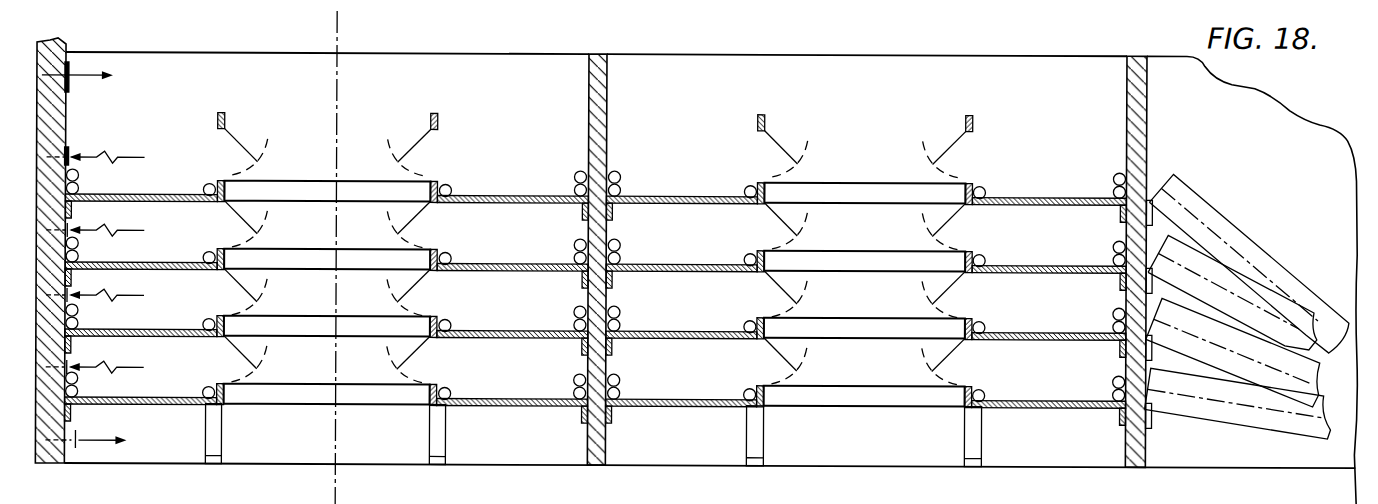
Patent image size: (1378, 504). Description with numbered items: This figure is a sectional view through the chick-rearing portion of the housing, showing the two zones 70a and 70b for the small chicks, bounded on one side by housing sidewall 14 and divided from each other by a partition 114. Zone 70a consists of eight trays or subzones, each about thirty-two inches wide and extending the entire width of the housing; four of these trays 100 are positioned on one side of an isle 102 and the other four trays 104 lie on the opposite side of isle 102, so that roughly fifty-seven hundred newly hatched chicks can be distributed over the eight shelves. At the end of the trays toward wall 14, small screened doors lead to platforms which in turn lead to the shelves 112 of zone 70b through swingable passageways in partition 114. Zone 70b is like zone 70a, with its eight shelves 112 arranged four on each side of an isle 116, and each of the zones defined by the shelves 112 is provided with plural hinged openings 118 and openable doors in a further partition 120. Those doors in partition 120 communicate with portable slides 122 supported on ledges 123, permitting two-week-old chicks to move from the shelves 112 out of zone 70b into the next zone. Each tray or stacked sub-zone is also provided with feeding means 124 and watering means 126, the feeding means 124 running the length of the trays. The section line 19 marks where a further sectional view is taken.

The sidewall 14 is at (425, 70).
The section line 19- 19 is at (363, 24).
The zone 70a is at (545, 135).
The zone 70b is at (819, 260).
The trays 100 is at (160, 202).
The isle 102 is at (331, 450).
The trays 104 is at (492, 270).
The shelves 112 is at (683, 202).
The partition 114 is at (599, 58).
The isle 116 is at (818, 450).
The hinged openings 118 is at (783, 215).
The partition 120 is at (1140, 139).
The portable slides 122 is at (1208, 215).
The ledges 123 is at (1153, 343).
The feeding means 124 is at (92, 181).
The watering means 126 is at (194, 178).